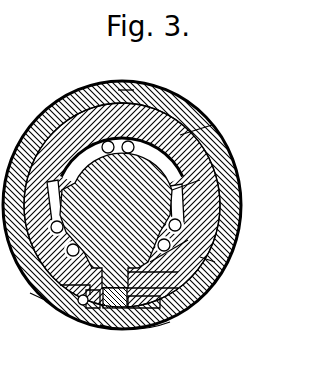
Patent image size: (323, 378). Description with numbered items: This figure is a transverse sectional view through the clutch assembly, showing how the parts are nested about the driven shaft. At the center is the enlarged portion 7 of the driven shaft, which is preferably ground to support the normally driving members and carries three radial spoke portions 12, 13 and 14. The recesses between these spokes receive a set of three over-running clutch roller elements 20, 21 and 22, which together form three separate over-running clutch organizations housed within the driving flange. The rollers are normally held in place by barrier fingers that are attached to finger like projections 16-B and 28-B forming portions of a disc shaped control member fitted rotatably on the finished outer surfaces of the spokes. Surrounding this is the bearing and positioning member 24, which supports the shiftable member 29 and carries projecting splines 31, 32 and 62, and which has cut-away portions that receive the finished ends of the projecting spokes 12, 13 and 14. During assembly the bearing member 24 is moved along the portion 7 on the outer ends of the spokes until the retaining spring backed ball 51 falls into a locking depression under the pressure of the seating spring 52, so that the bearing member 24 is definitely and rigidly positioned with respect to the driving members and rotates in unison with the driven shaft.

The enlarged portion 7 is at (69, 322).
The spoke portion 12 is at (27, 150).
The spoke portion 13 is at (200, 286).
The spoke portion 14 is at (222, 151).
The finger like projection 16-B is at (212, 125).
The over-running clutch roller element 20 is at (48, 308).
The over-running clutch roller element 21 is at (170, 247).
The over-running clutch roller element 22 is at (193, 108).
The bearing and positioning member 24 is at (203, 189).
The finger like projection 28-B is at (83, 130).
The shiftable member 29 is at (222, 168).
The projecting spline 31 is at (128, 99).
The projecting spline 32 is at (163, 320).
The spring backed ball 51 is at (90, 324).
The seating spring 52 is at (117, 323).
The projecting spline 62 is at (215, 207).